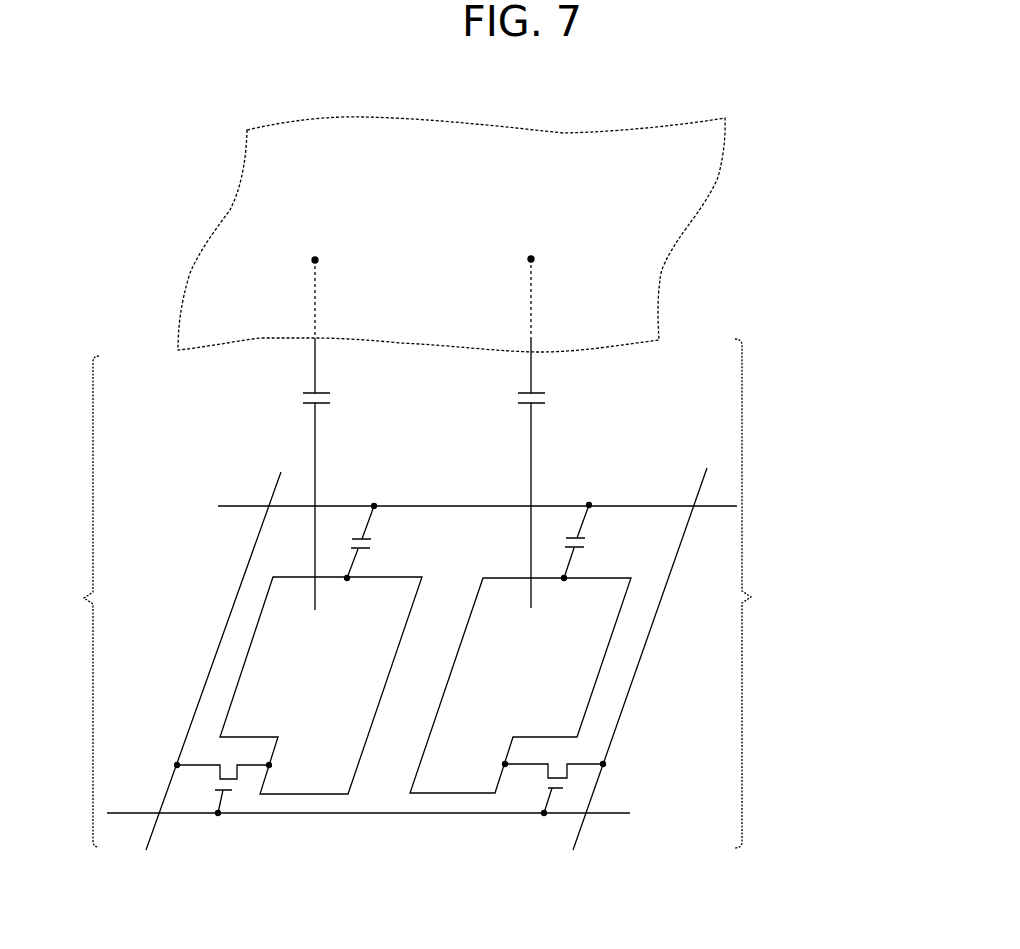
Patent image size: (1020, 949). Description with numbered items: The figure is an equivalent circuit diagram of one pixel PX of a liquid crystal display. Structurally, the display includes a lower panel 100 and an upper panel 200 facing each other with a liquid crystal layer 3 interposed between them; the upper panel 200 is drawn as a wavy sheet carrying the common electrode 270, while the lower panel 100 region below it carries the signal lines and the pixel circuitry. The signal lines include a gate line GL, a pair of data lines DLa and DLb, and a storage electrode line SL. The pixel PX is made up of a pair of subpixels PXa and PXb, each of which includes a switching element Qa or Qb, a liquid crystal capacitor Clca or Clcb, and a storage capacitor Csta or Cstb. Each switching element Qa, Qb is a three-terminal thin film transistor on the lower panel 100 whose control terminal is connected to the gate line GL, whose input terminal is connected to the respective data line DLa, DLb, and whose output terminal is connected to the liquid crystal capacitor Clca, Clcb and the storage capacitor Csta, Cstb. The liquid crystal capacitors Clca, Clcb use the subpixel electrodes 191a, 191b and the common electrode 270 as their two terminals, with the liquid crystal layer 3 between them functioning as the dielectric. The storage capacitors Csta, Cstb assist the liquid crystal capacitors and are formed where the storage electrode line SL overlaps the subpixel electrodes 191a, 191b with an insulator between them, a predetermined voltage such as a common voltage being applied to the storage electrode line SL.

The common electrode 270 is at (717, 182).
The upper panel 200 is at (518, 234).
The liquid crystal layer 3 is at (579, 474).
The lower panel 100 is at (464, 625).
The subpixel electrode 191a is at (307, 797).
The subpixel electrode 191b is at (603, 652).
The liquid crystal capacitor Clca is at (341, 474).
The liquid crystal capacitor Clcb is at (557, 473).
The storage capacitor Csta is at (385, 542).
The storage capacitor Cstb is at (602, 542).
The storage electrode line SL is at (457, 508).
The gate line GL is at (386, 813).
The data line DLa is at (223, 643).
The data line DLb is at (649, 643).
The switching element Qa is at (223, 789).
The switching element Qb is at (554, 789).
The subpixel PXa is at (67, 601).
The subpixel PXb is at (767, 593).
The pixel PX is at (443, 834).